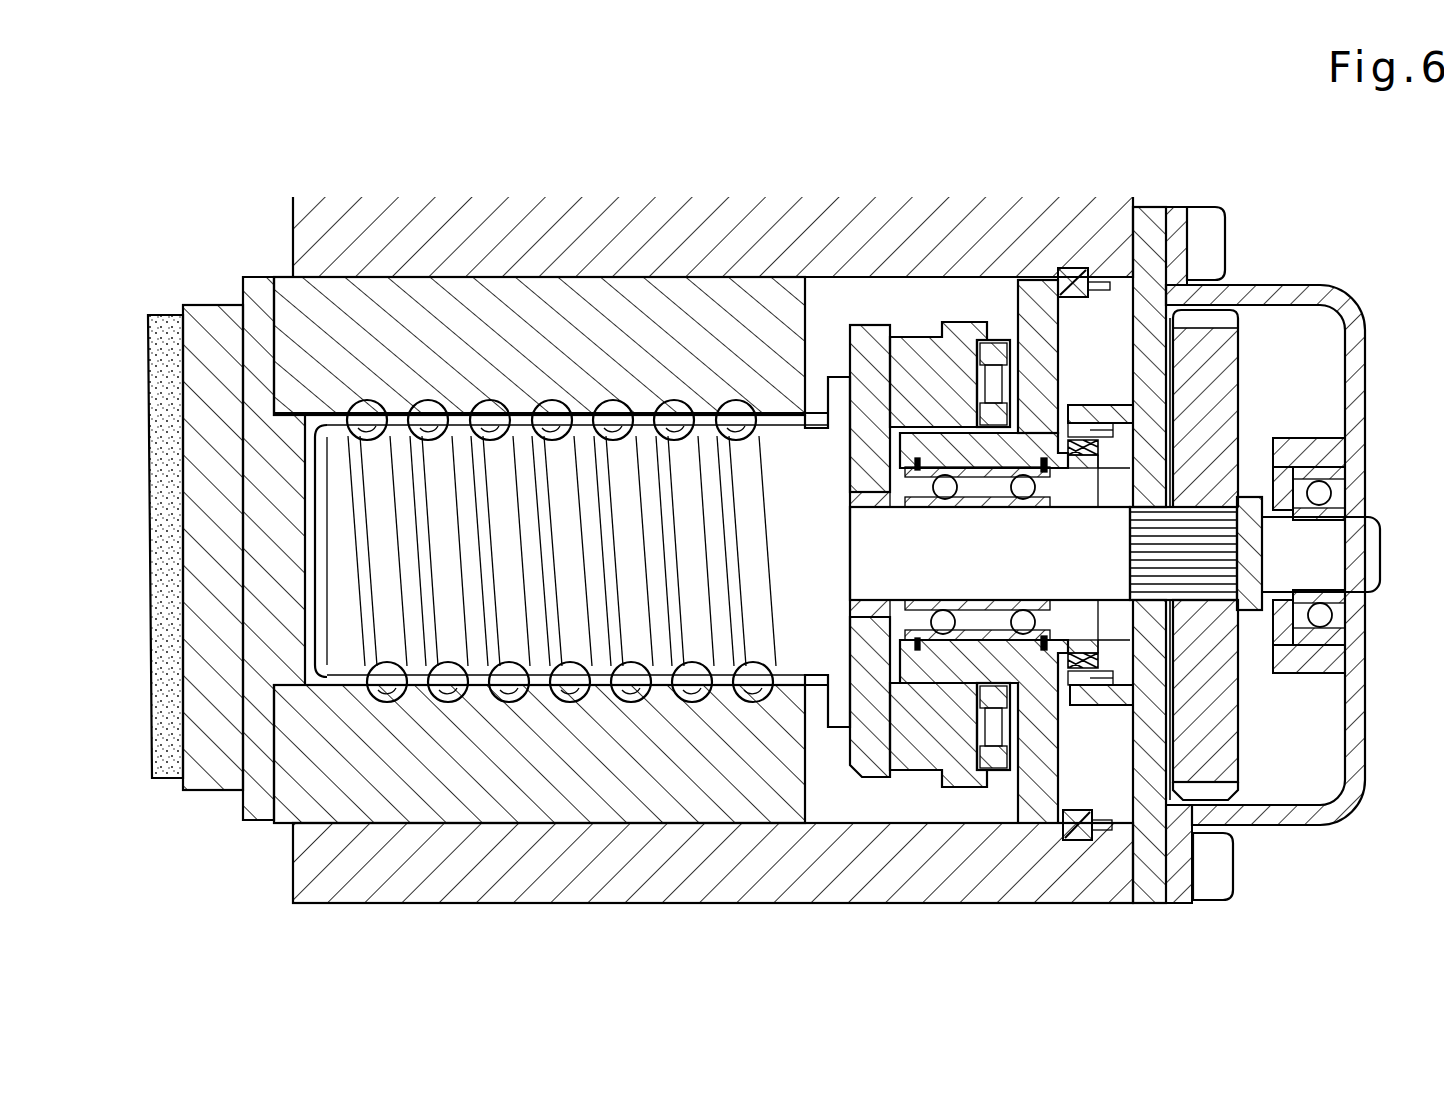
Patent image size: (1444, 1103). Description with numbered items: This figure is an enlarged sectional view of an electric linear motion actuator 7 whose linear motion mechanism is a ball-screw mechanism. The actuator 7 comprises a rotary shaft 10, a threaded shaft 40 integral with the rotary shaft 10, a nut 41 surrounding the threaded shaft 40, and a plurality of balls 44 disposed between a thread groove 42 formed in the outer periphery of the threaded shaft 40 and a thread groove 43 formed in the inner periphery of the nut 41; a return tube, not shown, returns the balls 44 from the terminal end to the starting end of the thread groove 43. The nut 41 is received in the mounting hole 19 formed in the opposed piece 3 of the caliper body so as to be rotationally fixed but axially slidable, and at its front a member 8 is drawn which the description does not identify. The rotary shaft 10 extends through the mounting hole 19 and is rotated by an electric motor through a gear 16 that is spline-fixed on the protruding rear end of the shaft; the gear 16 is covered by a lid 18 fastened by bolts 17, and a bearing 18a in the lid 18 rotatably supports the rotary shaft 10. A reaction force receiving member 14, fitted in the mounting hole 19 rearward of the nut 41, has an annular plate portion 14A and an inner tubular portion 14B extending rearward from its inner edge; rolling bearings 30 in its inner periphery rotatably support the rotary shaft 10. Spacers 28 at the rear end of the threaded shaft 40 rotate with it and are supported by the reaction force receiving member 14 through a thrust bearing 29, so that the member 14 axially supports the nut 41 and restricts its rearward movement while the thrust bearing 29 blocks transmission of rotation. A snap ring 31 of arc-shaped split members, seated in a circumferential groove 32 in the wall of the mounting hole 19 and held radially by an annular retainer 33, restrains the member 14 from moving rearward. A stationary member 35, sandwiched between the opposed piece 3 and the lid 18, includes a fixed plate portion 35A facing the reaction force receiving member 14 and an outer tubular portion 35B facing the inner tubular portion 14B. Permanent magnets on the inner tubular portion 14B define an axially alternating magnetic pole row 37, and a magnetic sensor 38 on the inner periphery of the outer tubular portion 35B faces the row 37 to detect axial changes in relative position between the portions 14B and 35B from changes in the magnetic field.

The opposed piece 3 is at (353, 893).
The linear motion actuator 7 is at (238, 297).
The friction pad 8 is at (160, 320).
The rotary shaft 10 is at (1386, 556).
The reaction force receiving member 14 is at (1012, 305).
The annular plate portion 14A is at (1038, 300).
The inner tubular portion 14B is at (1076, 468).
The gear 16 is at (1240, 690).
The bolts 17 is at (1203, 218).
The lid 18 is at (1365, 742).
The bearing 18a is at (1345, 493).
The mounting hole 19 is at (528, 810).
The spacers 28 is at (927, 760).
The thrust bearing 29 is at (958, 775).
The rolling bearings 30 is at (1020, 500).
The snap ring 31 is at (1000, 775).
The circumferential groove 32 is at (1080, 842).
The annular retainer 33 is at (1108, 828).
The stationary member 35 is at (1148, 215).
The fixed plate portion 35A is at (1162, 346).
The outer tubular portion 35B is at (1113, 430).
The magnetic pole row 37 is at (1100, 452).
The magnetic sensor 38 is at (1130, 423).
The threaded shaft 40 is at (783, 443).
The nut 41 is at (683, 300).
The thread groove 42 is at (665, 402).
The thread groove 43 is at (548, 402).
The balls 44 is at (425, 402).